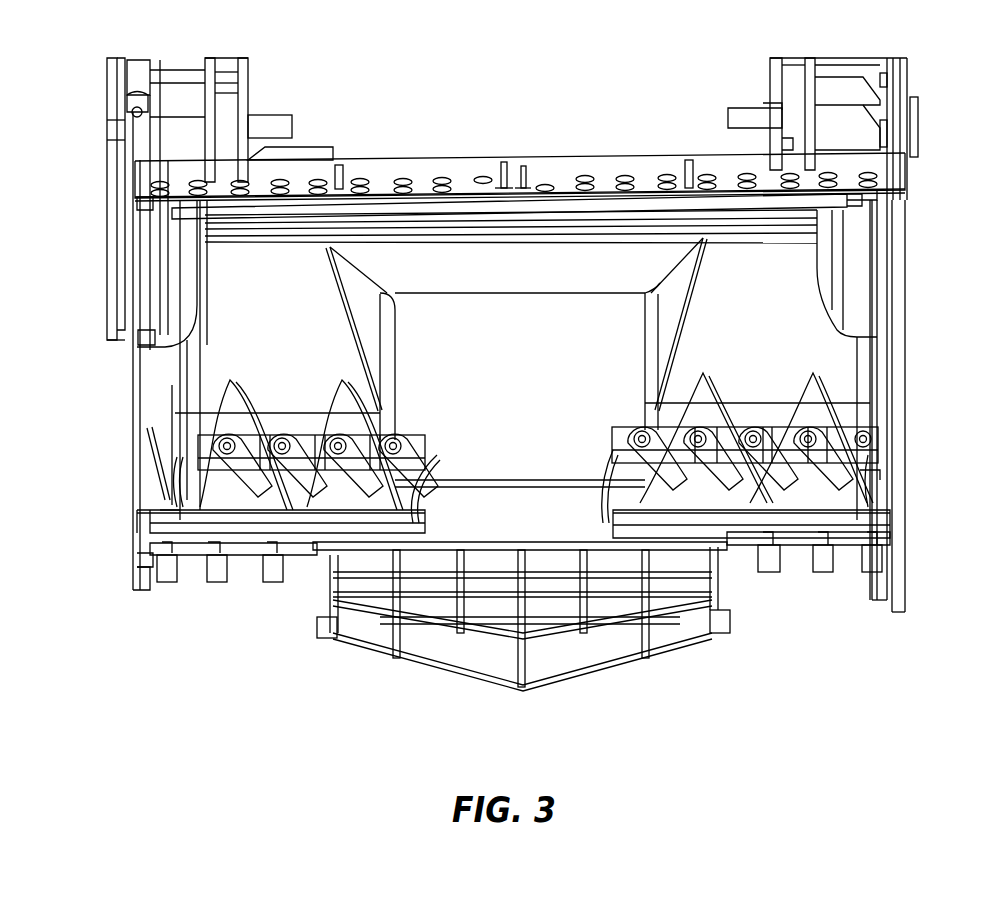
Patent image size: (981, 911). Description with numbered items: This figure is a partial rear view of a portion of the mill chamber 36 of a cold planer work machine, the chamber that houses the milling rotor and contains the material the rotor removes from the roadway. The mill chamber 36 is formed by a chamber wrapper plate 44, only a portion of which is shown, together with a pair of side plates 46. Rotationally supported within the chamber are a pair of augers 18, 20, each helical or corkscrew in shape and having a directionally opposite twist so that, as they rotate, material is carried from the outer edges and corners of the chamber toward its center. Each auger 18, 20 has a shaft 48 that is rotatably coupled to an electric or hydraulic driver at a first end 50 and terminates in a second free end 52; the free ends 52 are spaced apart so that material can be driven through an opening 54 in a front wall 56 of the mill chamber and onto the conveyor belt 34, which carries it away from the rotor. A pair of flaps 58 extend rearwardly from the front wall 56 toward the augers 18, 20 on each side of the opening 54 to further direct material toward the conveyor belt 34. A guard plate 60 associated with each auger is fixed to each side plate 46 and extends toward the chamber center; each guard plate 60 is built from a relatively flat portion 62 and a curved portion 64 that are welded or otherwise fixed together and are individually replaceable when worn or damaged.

The auger 18 is at (810, 385).
The auger 20 is at (230, 392).
The conveyor belt 34 is at (518, 480).
The mill chamber 36 is at (493, 88).
The chamber wrapper plate 44 is at (556, 170).
The side plate 46 is at (138, 443).
The shaft 48 is at (300, 458).
The first end 50 is at (175, 515).
The second free end 52 is at (437, 545).
The opening 54 is at (480, 305).
The front wall 56 is at (240, 290).
The flap 58 is at (357, 282).
The guard plate 60 is at (245, 518).
The flat portion 62 is at (160, 520).
The curved portion 64 is at (348, 507).